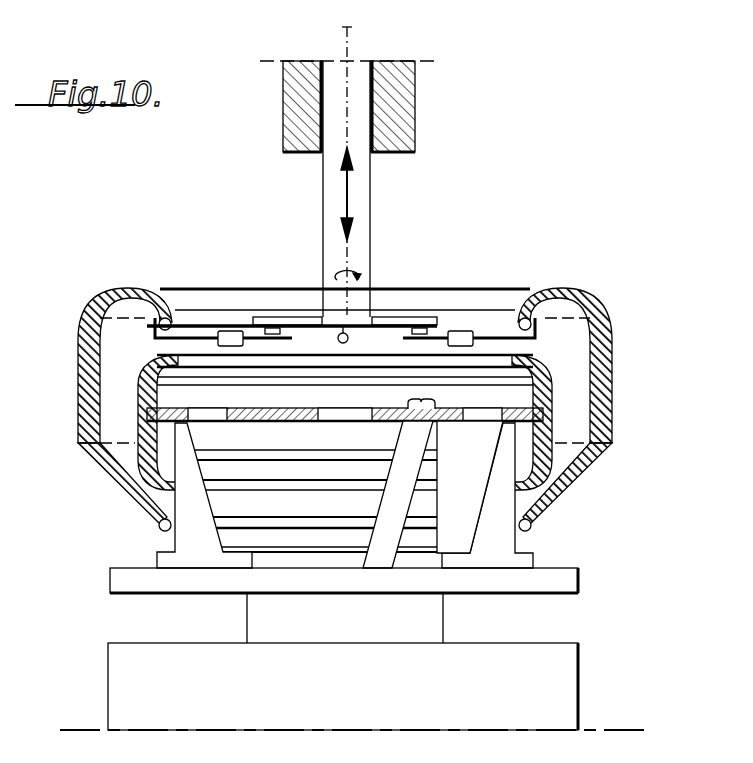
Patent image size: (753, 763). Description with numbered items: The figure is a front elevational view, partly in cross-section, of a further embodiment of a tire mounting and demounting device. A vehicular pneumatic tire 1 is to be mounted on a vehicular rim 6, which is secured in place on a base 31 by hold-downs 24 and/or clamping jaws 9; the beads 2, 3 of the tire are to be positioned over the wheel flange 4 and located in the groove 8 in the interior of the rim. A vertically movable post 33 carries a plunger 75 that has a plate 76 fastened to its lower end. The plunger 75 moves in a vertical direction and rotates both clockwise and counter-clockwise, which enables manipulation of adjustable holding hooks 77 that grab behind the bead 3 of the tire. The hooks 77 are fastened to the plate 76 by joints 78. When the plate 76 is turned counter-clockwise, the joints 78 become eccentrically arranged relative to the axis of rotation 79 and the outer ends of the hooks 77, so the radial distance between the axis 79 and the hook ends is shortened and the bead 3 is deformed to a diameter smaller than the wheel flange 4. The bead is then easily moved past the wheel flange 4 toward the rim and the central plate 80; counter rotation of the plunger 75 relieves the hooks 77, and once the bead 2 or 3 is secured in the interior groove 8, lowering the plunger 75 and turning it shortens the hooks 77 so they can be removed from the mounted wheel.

The vehicular pneumatic tire 1 is at (80, 418).
The circular bead 2 is at (159, 526).
The circular bead 3 is at (176, 318).
The wheel flange 4 is at (540, 362).
The wheel rim 6 is at (546, 415).
The groove 8 is at (532, 478).
The clamping jaws 9 is at (185, 543).
The hold-downs 24 is at (412, 444).
The base 31 is at (125, 576).
The vertically movable post 33 is at (400, 138).
The plunger 75 is at (335, 197).
The plate 76 is at (393, 322).
The adjustable holding hooks 77 is at (197, 336).
The joints 78 is at (272, 316).
The axis of rotation 79 is at (352, 41).
The central plate 80 is at (448, 421).